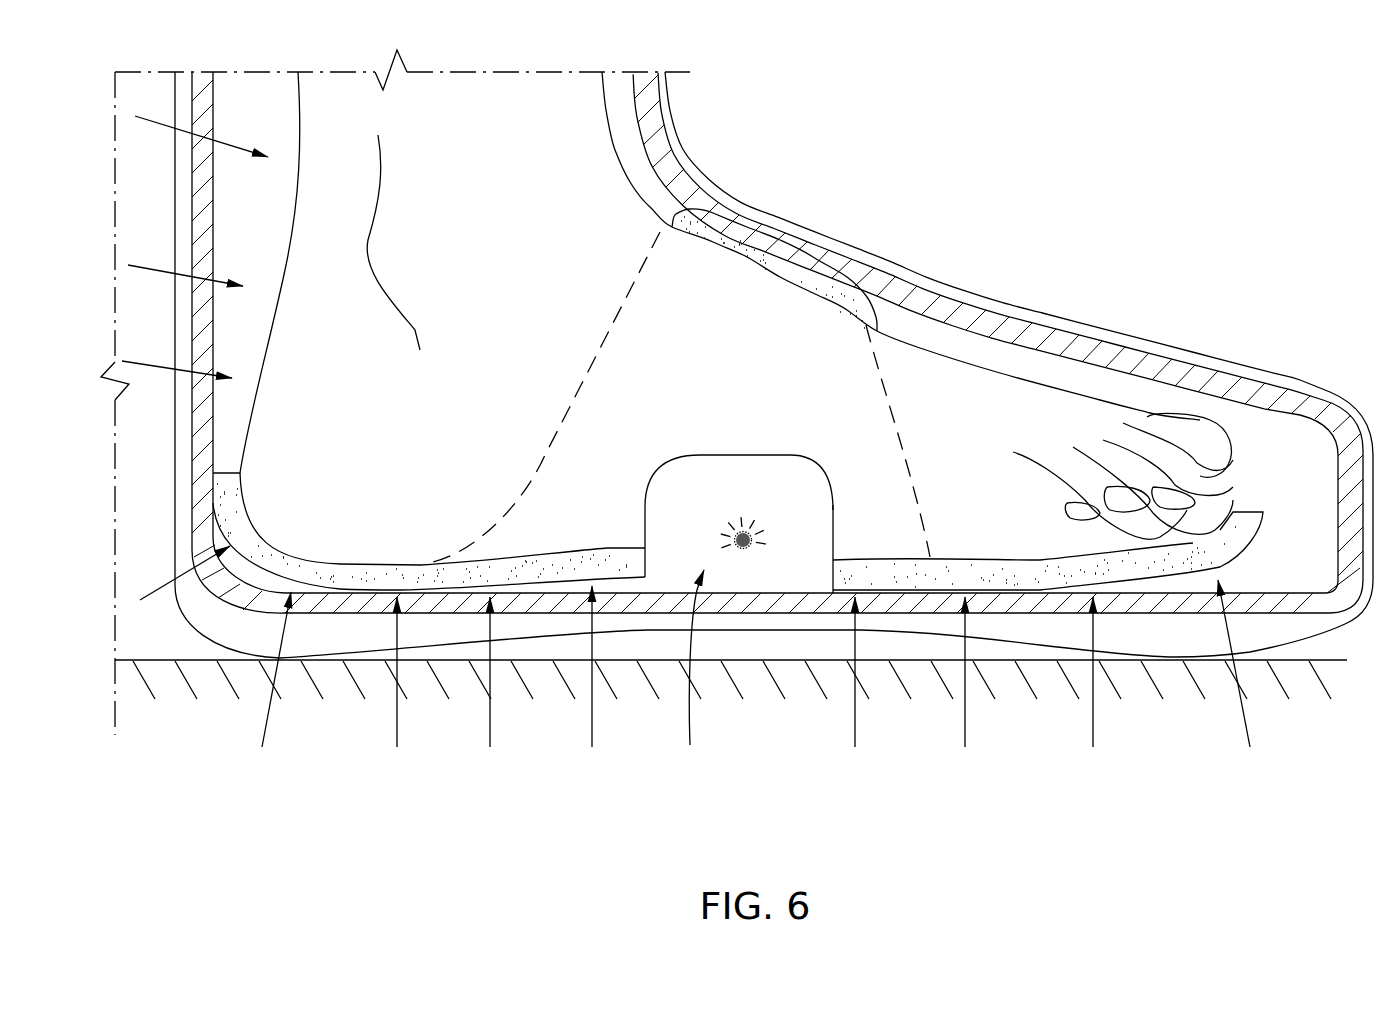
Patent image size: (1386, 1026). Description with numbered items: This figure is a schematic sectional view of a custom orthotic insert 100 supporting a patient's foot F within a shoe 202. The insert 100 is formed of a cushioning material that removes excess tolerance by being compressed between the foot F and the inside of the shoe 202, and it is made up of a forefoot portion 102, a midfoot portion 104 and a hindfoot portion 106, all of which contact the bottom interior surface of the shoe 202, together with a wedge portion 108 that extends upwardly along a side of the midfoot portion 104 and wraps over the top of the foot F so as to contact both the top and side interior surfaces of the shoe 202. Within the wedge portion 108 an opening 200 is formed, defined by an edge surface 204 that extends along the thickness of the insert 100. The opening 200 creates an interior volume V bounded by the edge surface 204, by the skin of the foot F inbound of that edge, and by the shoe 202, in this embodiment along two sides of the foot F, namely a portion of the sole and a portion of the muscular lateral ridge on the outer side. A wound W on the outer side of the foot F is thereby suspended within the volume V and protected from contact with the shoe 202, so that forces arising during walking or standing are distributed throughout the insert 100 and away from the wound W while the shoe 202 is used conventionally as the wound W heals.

The orthotic insert 100 is at (785, 265).
The forefoot portion 102 is at (1033, 572).
The midfoot portion 104 is at (620, 565).
The hindfoot portion 106 is at (330, 583).
The wedge portion 108 is at (606, 340).
The opening 200 is at (742, 456).
The shoe 202 is at (1063, 343).
The edge surface 204 is at (831, 545).
The foot F is at (508, 103).
The interior volume V is at (697, 674).
The wound W is at (742, 558).